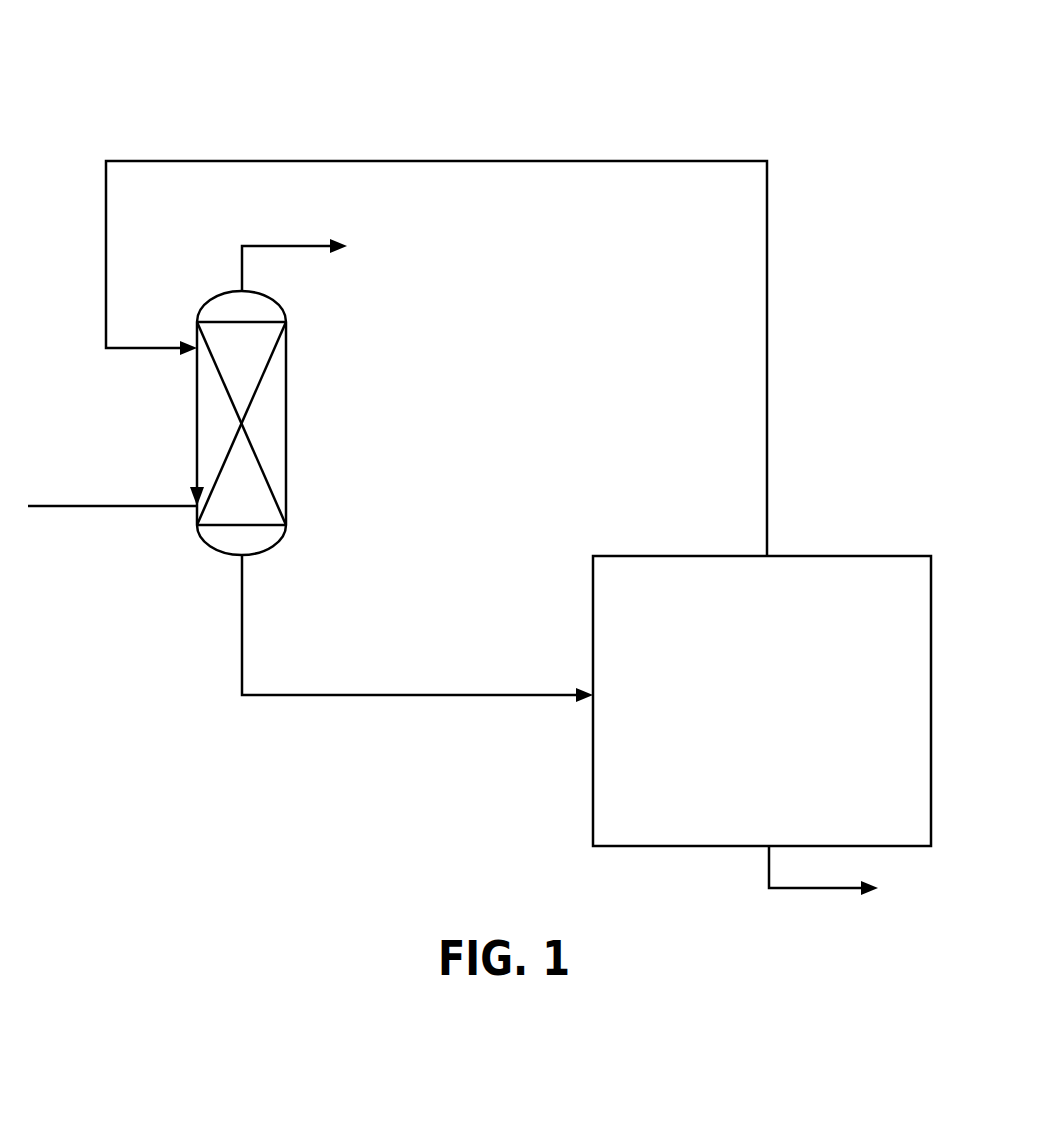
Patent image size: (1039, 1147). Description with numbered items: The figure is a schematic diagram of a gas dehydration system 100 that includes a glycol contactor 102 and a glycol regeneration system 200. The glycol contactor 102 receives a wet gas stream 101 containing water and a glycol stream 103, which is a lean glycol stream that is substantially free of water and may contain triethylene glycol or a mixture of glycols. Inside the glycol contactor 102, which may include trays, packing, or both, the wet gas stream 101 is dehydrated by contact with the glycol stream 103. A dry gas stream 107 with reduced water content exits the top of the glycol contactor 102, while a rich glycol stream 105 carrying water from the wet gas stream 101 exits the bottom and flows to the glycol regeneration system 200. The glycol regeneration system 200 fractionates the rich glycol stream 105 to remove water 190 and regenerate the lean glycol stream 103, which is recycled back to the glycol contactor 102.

The gas dehydration system 100 is at (122, 89).
The wet gas stream 101 is at (70, 506).
The glycol contactor 102 is at (286, 422).
The glycol stream 103 is at (546, 161).
The rich glycol stream 105 is at (382, 695).
The dry gas stream 107 is at (287, 246).
The water 190 is at (808, 888).
The glycol regeneration system 200 is at (785, 715).